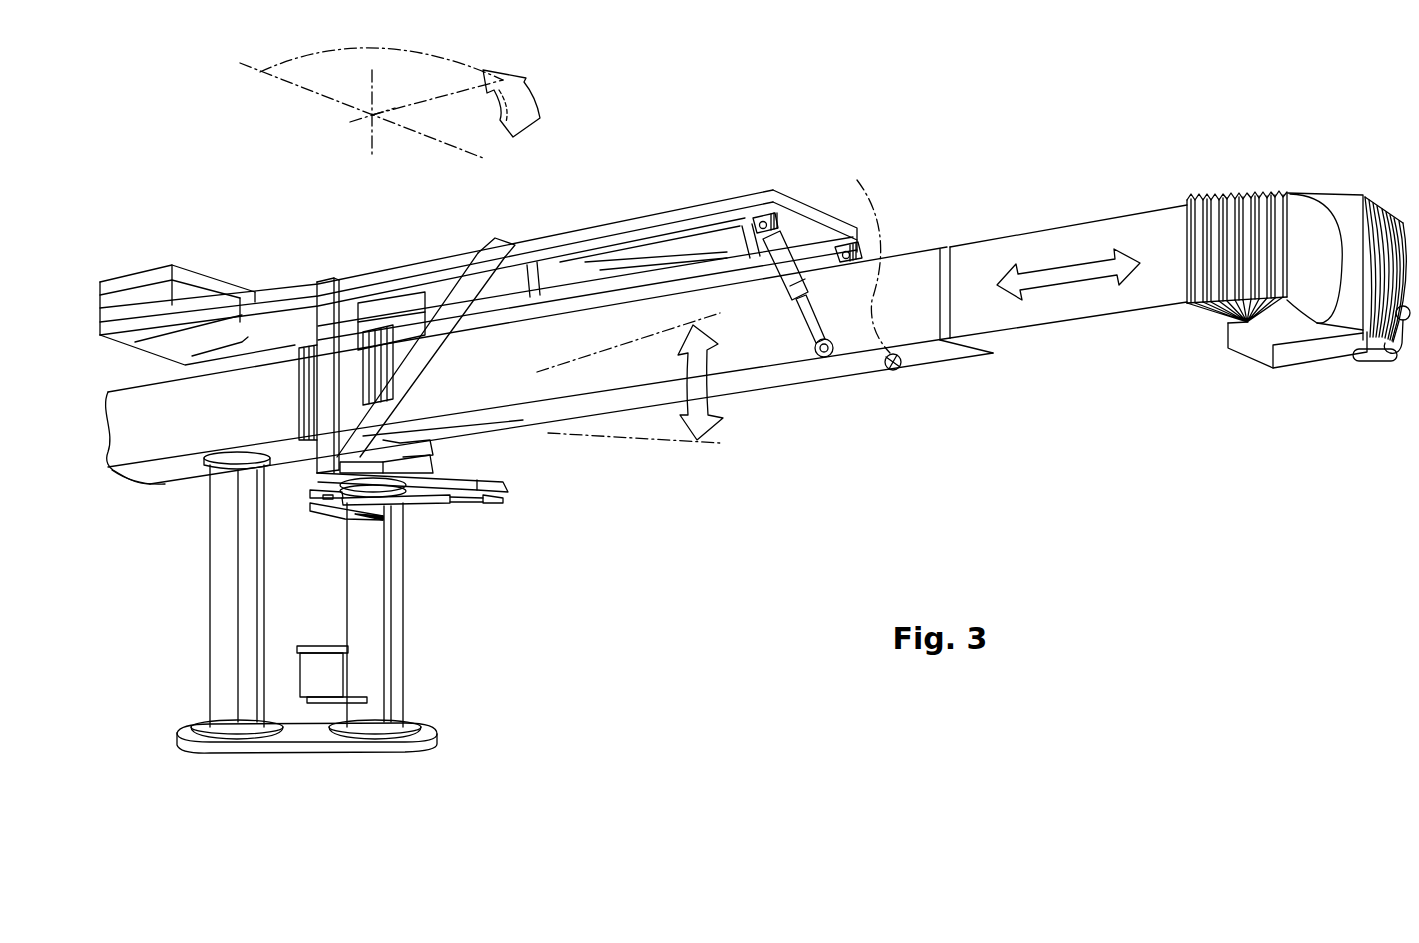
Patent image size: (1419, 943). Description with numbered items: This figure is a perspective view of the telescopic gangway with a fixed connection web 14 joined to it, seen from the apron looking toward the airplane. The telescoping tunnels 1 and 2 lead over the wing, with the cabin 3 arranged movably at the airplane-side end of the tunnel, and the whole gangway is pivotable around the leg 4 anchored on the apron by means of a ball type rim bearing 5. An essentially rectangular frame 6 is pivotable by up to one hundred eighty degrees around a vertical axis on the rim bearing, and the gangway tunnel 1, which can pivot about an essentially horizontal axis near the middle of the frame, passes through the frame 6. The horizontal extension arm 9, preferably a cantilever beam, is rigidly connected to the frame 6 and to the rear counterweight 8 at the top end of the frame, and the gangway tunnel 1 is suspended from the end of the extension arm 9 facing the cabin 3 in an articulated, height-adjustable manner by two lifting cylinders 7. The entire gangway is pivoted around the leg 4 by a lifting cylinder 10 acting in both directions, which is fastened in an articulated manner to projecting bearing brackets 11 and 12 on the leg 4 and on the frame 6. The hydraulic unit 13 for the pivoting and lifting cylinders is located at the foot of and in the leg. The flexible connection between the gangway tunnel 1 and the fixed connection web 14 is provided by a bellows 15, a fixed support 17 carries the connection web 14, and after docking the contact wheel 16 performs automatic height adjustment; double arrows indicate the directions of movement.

The gangway tunnel 1 is at (851, 363).
The telescoping tunnel 2 is at (1085, 327).
The cabin 3 is at (1318, 350).
The leg 4 is at (387, 668).
The ball type rim bearing 5 is at (307, 480).
The frame 6 is at (327, 290).
The lifting cylinders 7 is at (797, 263).
The rear counterweight 8 is at (140, 287).
The extension arm 9 is at (687, 220).
The lifting cylinder 10 is at (420, 498).
The bearing bracket 11 is at (350, 518).
The bearing bracket 12 is at (465, 473).
The hydraulic unit 13 is at (320, 677).
The fixed connection web 14 is at (167, 470).
The bellows 15 is at (373, 343).
The contact wheel 16 is at (1413, 217).
The fixed support 17 is at (230, 650).